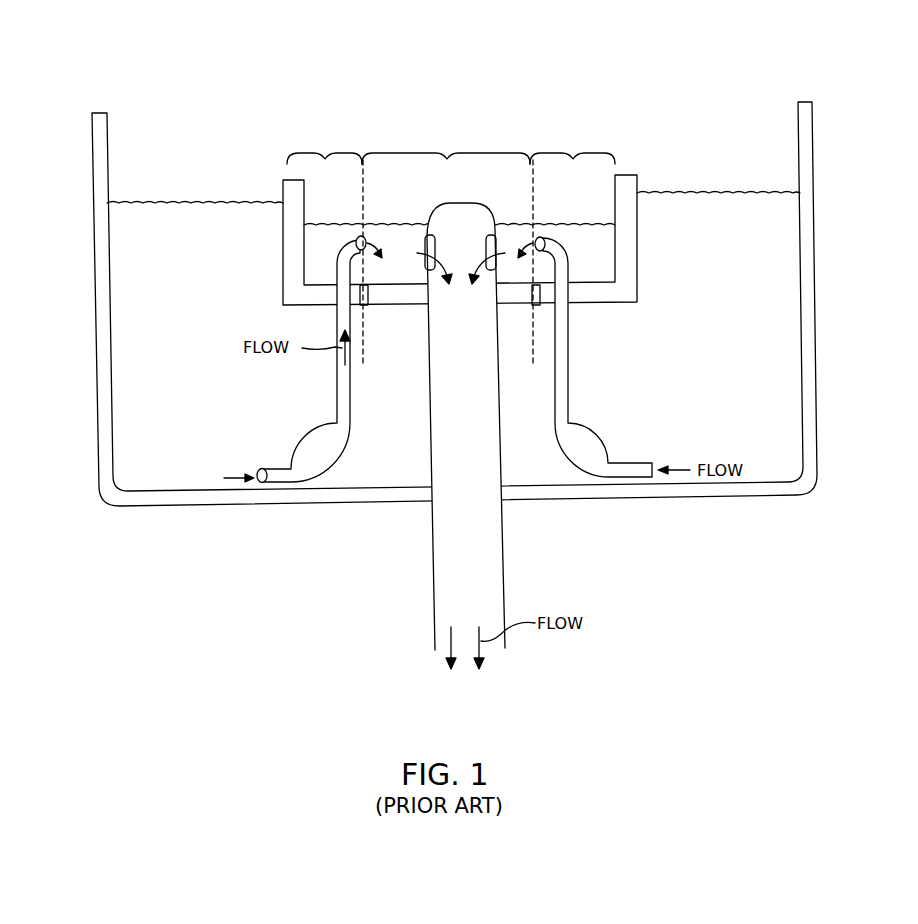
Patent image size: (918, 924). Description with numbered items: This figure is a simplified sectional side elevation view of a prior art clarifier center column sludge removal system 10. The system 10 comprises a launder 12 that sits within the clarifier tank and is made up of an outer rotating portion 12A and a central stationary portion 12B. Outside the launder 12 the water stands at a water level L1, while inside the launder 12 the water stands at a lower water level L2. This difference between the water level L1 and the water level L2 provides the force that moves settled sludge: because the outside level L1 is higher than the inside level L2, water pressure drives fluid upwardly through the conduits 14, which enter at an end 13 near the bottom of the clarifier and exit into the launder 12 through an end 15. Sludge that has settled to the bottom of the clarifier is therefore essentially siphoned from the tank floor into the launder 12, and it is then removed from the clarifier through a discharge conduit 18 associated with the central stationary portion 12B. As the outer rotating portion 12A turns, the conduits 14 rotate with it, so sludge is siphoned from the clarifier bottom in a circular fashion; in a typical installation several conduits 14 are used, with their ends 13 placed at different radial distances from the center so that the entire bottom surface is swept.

The sludge removal system 10 is at (351, 42).
The launder 12 is at (610, 124).
The outer rotating portion 12A is at (451, 144).
The central stationary portion 12B is at (450, 247).
The end 13 is at (261, 469).
The conduits 14 is at (345, 396).
The end 15 is at (359, 241).
The discharge conduit 18 is at (487, 456).
The water level L1 is at (210, 202).
The water level L2 is at (585, 224).